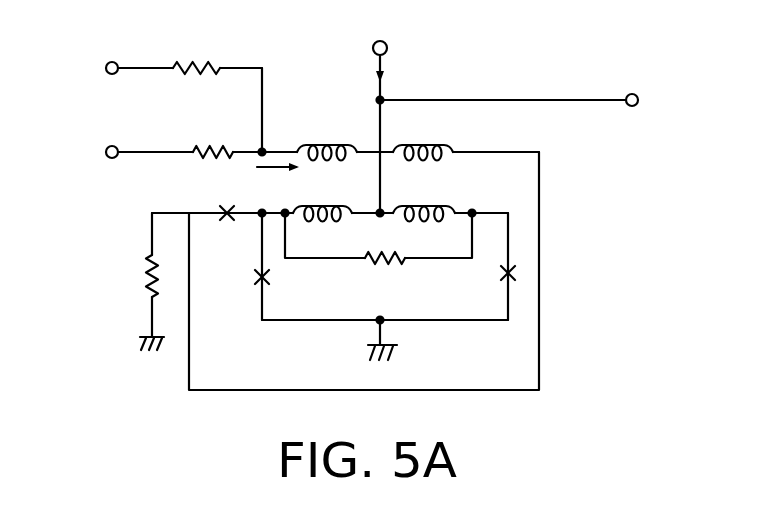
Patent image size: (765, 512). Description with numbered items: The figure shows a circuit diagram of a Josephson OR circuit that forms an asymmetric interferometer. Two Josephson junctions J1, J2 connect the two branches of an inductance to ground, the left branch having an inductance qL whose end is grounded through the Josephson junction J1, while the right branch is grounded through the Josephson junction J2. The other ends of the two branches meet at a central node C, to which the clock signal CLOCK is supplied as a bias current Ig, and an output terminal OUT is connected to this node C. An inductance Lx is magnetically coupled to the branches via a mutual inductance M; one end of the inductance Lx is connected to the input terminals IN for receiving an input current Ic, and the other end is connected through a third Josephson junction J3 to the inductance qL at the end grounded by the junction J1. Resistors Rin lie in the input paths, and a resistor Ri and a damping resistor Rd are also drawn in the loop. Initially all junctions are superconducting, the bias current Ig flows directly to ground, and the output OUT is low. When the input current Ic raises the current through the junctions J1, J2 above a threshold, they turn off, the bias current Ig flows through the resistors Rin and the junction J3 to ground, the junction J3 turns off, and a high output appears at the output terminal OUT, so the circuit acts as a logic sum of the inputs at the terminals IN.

The input terminal IN is at (130, 110).
The resistor Rin is at (203, 96).
The inductance Lx is at (375, 139).
The clock signal CLOCK is at (390, 108).
The bias current Ig is at (395, 69).
The output terminal OUT is at (540, 101).
The input current Ic is at (278, 181).
The third Josephson junction J3 is at (225, 198).
The Josephson junction J1 is at (239, 266).
The Josephson junction J2 is at (490, 266).
The input resistor Ri is at (133, 281).
The inductance qL is at (374, 229).
The central node C is at (387, 197).
The mutual inductance M is at (480, 192).
The damping resistor Rd is at (378, 255).